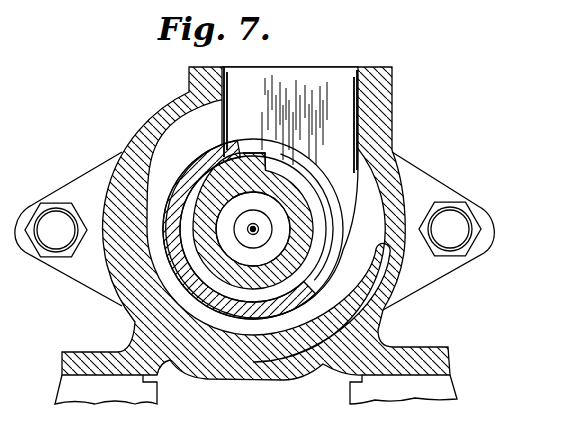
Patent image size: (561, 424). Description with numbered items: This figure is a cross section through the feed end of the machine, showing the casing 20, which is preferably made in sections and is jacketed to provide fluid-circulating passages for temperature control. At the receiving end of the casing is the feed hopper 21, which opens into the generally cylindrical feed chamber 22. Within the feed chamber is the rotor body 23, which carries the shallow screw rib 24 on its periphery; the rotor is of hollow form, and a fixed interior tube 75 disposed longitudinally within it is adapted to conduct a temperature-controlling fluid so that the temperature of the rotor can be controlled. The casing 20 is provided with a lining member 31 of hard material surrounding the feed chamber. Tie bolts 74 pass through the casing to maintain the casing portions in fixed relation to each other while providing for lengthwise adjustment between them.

The casing 20 is at (145, 125).
The feed hopper 21 is at (333, 84).
The feed chamber 22 is at (200, 272).
The rotor body 23 is at (210, 247).
The shallow screw rib 24 is at (255, 155).
The lining member 31 is at (227, 309).
The tie bolts 74 is at (47, 216).
The fixed interior tube 75 is at (257, 228).